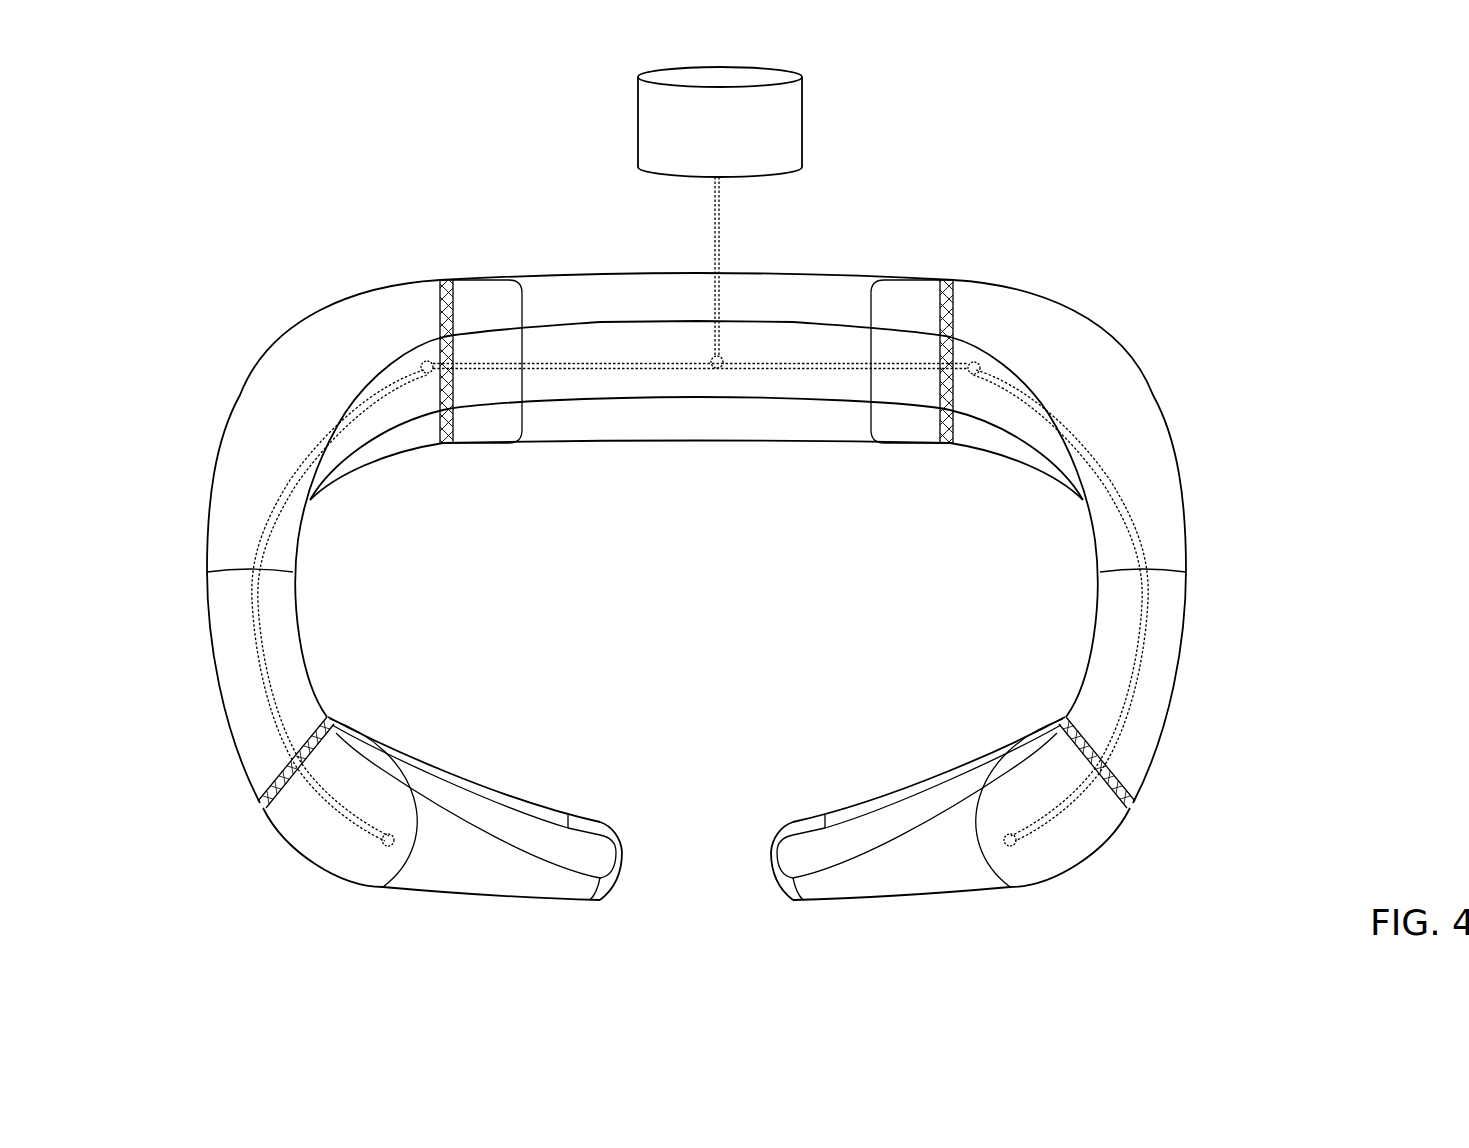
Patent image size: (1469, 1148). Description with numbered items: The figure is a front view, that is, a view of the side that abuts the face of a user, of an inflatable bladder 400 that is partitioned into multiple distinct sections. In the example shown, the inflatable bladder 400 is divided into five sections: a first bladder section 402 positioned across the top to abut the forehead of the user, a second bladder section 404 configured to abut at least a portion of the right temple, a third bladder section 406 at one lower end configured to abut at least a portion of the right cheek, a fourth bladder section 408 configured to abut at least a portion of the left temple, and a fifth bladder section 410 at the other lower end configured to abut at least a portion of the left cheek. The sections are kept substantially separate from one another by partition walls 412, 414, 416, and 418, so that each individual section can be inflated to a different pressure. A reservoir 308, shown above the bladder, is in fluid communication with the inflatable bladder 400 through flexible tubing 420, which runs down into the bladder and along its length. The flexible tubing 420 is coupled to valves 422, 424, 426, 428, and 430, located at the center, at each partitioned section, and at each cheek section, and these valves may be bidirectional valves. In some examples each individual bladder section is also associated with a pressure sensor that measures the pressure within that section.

The inflatable bladder 400 is at (212, 148).
The reservoir 308 is at (720, 122).
The first bladder section 402 is at (588, 285).
The second bladder section 404 is at (1125, 385).
The third bladder section 406 is at (1065, 860).
The fourth bladder section 408 is at (268, 405).
The fifth bladder section 410 is at (375, 870).
The partition wall 412 is at (453, 278).
The partition wall 414 is at (950, 283).
The partition wall 416 is at (262, 803).
The partition wall 418 is at (1133, 807).
The flexible tubing 420 is at (717, 238).
The valve 422 is at (716, 368).
The valve 424 is at (427, 373).
The valve 426 is at (392, 835).
The valve 428 is at (973, 374).
The valve 430 is at (1007, 835).